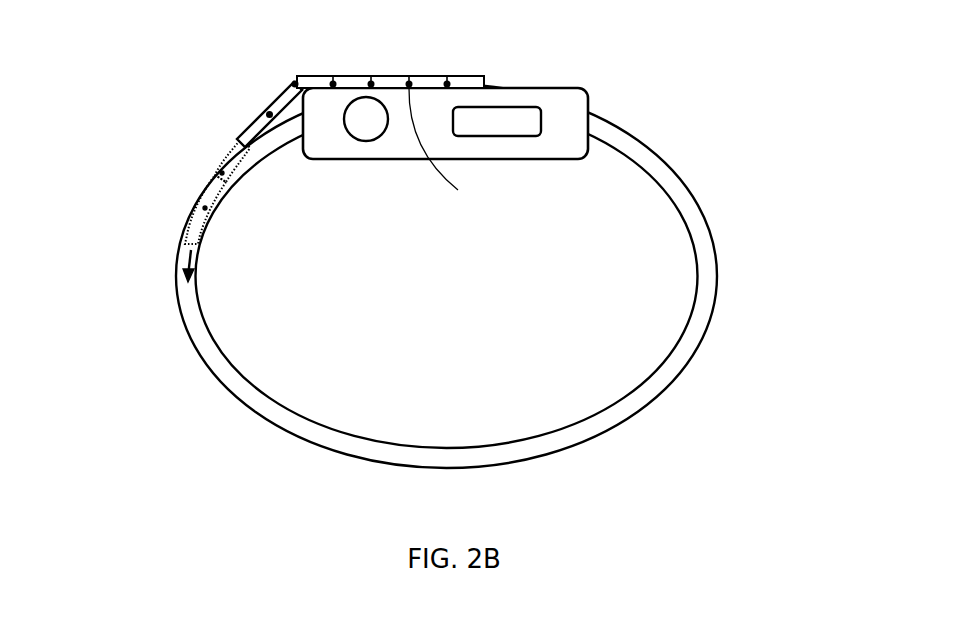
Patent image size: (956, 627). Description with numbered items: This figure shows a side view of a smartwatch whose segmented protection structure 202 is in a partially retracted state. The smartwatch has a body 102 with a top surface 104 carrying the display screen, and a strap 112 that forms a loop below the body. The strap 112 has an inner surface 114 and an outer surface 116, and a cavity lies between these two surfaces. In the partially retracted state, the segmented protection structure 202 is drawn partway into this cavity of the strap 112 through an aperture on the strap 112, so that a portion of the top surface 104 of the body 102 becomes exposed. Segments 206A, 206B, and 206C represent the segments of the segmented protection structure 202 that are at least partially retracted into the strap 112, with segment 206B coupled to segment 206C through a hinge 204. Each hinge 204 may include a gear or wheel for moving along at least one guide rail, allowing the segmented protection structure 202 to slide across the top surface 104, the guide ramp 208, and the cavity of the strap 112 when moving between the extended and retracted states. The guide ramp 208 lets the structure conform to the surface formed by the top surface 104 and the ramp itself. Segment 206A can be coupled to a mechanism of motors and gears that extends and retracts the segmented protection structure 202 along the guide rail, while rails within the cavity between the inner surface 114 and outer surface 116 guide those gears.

The body 102 is at (562, 110).
The top surface 104 is at (444, 153).
The strap 112 is at (707, 298).
The inner surface 114 is at (681, 338).
The outer surface 116 is at (491, 276).
The segmented protection structure 202 is at (485, 80).
The hinge 204 is at (407, 82).
The segment 206A is at (190, 232).
The segment 206B is at (215, 192).
The segment 206C is at (230, 160).
The guide ramp 208 is at (297, 90).